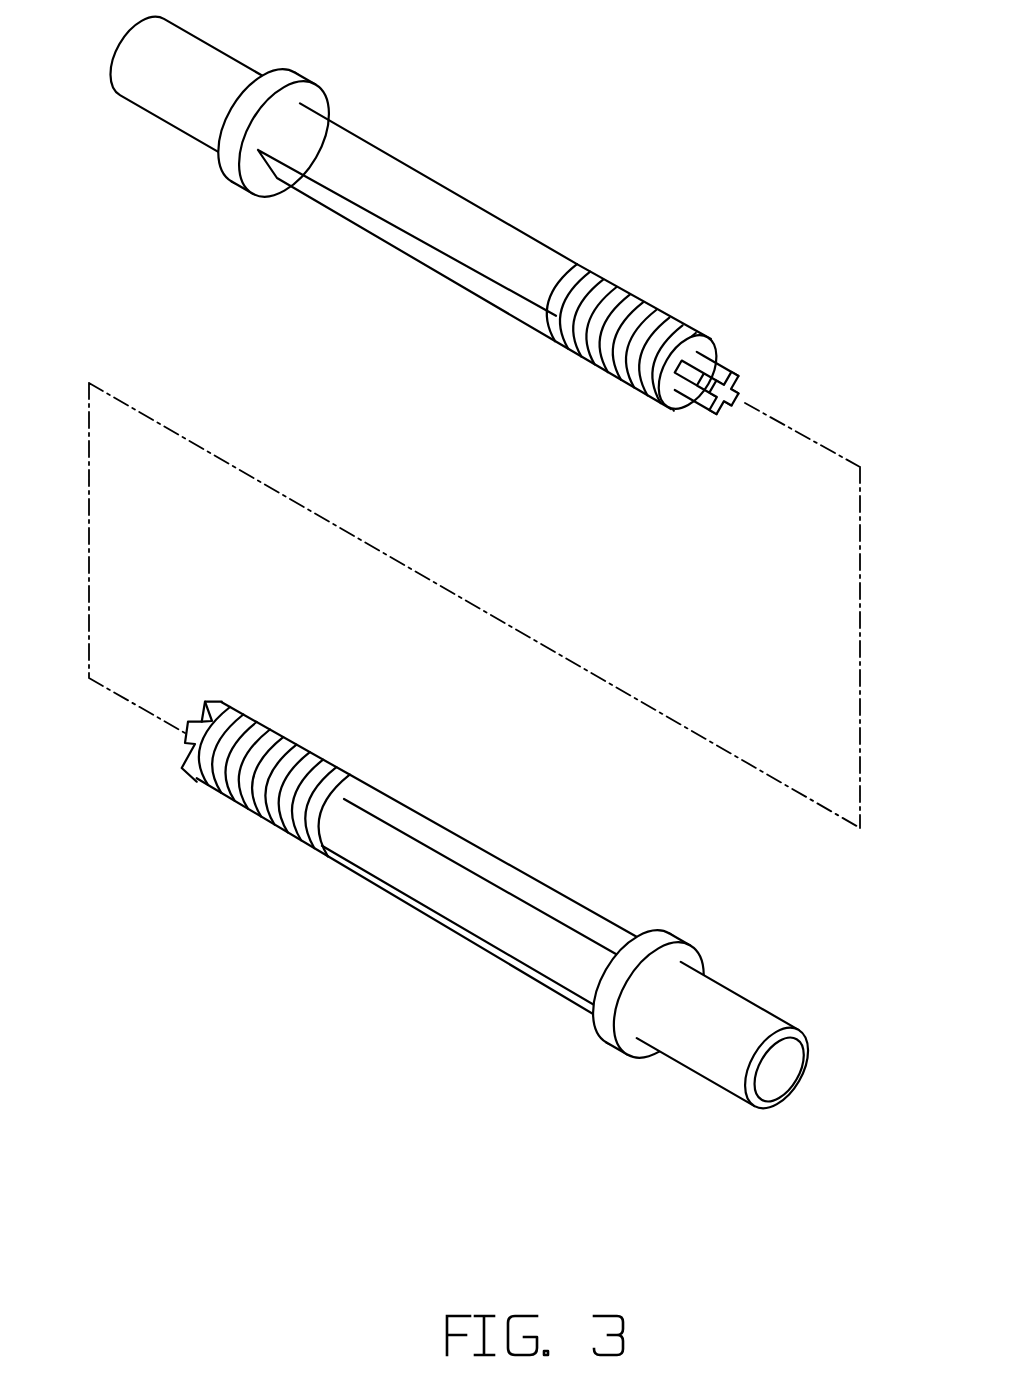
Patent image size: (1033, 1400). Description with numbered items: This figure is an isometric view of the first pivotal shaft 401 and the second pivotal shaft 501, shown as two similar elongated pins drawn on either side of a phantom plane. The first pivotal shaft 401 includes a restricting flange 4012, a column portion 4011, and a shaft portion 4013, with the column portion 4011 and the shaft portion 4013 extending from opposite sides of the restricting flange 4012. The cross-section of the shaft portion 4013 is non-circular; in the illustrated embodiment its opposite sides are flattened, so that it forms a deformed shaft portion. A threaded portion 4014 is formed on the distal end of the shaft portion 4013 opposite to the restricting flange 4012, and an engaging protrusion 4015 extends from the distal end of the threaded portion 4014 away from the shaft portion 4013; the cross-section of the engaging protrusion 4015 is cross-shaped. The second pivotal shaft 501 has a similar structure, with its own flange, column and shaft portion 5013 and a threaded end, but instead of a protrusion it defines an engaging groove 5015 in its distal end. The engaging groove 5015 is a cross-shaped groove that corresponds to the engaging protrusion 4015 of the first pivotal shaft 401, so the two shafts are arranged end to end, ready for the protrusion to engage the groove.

The second pivotal shaft 501 is at (464, 223).
The shaft portion 5013 is at (410, 194).
The engaging groove 5015 is at (690, 362).
The first pivotal shaft 401 is at (435, 959).
The column portion 4011 is at (705, 1055).
The restricting flange 4012 is at (605, 1015).
The shaft portion 4013 is at (415, 872).
The threaded portion 4014 is at (250, 792).
The engaging protrusion 4015 is at (187, 737).